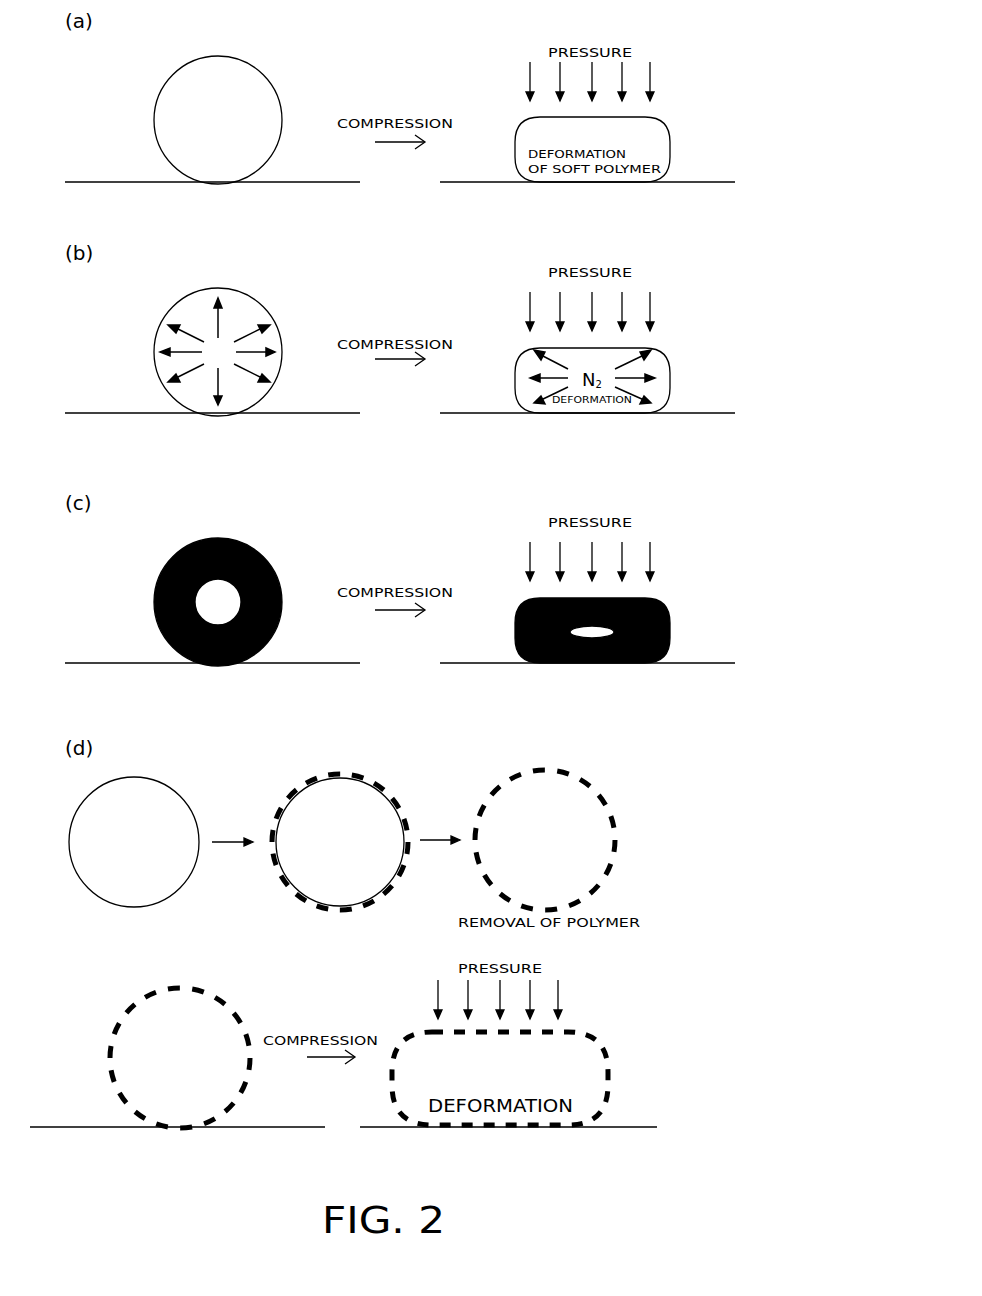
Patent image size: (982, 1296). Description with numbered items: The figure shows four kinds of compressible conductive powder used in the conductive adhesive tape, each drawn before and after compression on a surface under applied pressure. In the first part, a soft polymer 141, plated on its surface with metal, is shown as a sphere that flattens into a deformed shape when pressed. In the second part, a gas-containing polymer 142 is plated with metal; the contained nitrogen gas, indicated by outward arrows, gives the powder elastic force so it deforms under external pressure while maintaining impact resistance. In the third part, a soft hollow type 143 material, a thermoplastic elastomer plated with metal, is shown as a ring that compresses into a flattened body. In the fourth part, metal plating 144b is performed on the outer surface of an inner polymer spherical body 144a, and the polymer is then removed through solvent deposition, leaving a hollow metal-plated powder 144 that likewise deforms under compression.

The soft polymer 141 is at (160, 95).
The gas-containing polymer 142 is at (160, 327).
The soft hollow type 143 is at (160, 577).
The inner polymer spherical body 144a is at (172, 790).
The metal plating 144b is at (350, 775).
The metal-plated powder 144 is at (215, 1000).